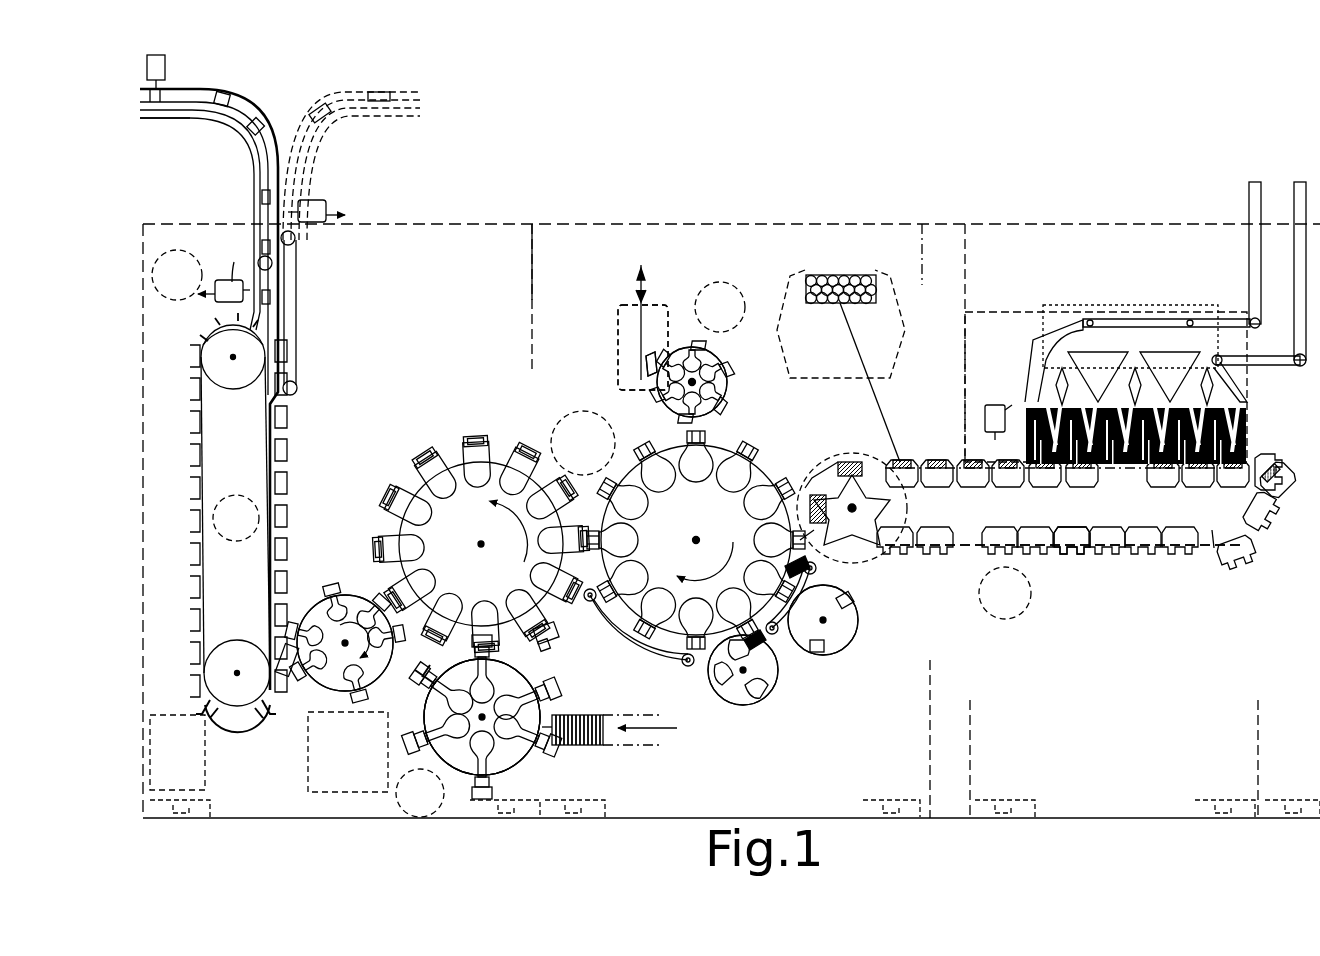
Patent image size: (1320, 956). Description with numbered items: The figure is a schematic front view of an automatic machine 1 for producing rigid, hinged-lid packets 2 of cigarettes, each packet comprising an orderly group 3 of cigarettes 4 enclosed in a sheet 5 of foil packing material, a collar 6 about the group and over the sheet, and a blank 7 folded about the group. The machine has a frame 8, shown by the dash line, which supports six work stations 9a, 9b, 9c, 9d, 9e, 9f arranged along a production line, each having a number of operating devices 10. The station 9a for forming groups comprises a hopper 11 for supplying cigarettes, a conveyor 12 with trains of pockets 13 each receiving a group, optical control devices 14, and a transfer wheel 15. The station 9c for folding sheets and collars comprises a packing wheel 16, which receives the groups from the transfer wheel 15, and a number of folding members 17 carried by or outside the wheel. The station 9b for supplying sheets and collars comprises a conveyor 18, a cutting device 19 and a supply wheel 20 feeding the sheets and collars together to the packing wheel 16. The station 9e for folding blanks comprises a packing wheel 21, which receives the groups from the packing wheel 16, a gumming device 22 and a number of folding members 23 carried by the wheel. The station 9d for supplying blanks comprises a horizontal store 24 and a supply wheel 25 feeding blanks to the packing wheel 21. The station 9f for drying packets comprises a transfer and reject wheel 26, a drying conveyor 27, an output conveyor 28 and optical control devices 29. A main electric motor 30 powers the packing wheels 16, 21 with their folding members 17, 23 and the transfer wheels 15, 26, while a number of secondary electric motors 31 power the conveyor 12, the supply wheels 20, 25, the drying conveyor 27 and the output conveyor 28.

The automatic machine 1 is at (968, 158).
The packet 2 is at (222, 96).
The group 3 is at (832, 268).
The cigarette 4 is at (855, 273).
The sheet 5 is at (640, 363).
The collar 6 is at (651, 364).
The blank 7 is at (478, 782).
The frame 8 is at (1073, 222).
The station for forming groups 9a is at (1166, 578).
The station for supplying sheets and collars 9b is at (663, 265).
The station for folding sheets and collars 9c is at (790, 695).
The station for supplying blanks 9d is at (408, 740).
The station for folding blanks 9e is at (436, 446).
The station for drying packets 9f is at (302, 462).
The operating devices 10 is at (558, 207).
The brush device 11 is at (1246, 432).
The conveyor 12 is at (1213, 535).
The pocket 13 is at (1078, 540).
The optical control devices 14 is at (995, 403).
The transfer wheel 15 is at (865, 572).
The packing wheel 16 is at (777, 460).
The folding members 17 is at (748, 458).
The conveyor 18 is at (617, 303).
The cutting device 19 is at (600, 373).
The supply wheel 20 is at (737, 385).
The packing wheel 21 is at (392, 466).
The gumming device 22 is at (552, 635).
The folding members 23 is at (600, 612).
The horizontal store 24 is at (620, 760).
The supply wheel 25 is at (525, 770).
The transfer and reject wheel 26 is at (305, 698).
The drying conveyor 27 is at (182, 477).
The output conveyor 28 is at (176, 120).
The optical control devices 29 is at (314, 206).
The main electric motor 30 is at (568, 418).
The secondary electric motors 31 is at (237, 494).